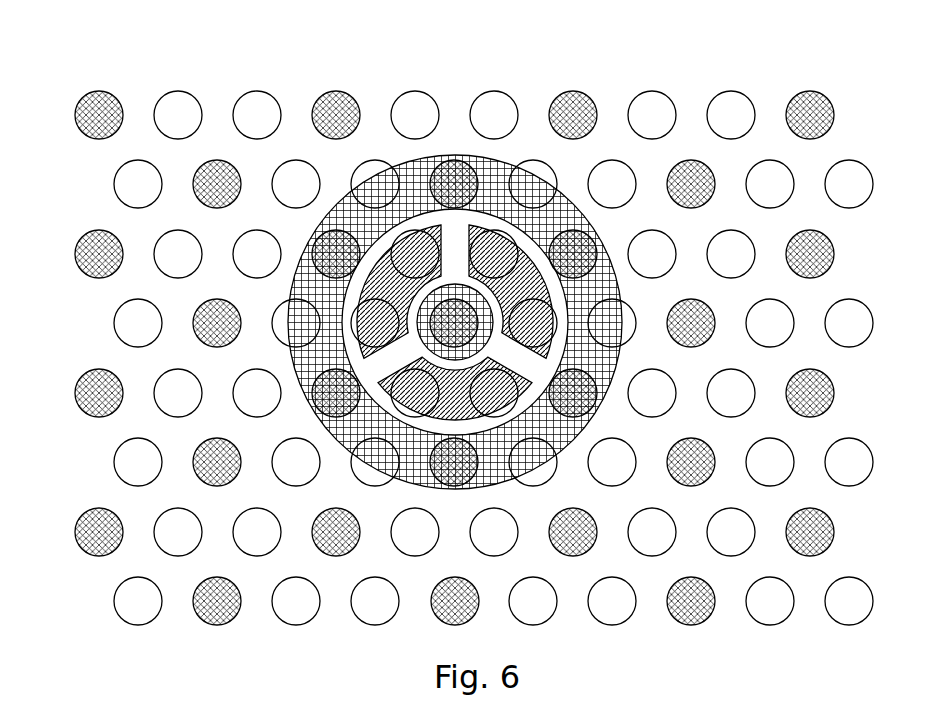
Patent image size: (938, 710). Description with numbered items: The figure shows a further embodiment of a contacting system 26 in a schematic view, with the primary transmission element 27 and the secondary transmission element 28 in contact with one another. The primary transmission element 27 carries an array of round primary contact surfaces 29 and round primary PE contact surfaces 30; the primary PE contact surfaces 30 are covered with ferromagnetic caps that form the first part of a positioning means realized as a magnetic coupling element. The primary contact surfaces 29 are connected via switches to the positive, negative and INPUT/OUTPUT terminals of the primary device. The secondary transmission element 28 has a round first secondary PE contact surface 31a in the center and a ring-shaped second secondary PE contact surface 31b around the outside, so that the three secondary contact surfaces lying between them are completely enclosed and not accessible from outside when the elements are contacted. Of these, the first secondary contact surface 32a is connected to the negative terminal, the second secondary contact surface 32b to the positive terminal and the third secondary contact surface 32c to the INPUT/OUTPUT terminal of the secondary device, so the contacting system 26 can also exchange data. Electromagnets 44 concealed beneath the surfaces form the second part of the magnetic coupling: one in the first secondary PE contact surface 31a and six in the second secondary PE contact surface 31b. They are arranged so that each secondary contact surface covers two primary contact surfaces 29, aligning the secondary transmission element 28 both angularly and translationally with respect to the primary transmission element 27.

The contacting system 26 is at (461, 388).
The primary transmission element 27 is at (424, 354).
The secondary transmission element 28 is at (410, 361).
The primary contact surfaces 29 is at (181, 530).
The primary PE contact surfaces 30 is at (336, 530).
The first secondary PE contact surface 31a is at (491, 317).
The second secondary PE contact surface 31b is at (550, 227).
The first secondary contact surface 32a is at (383, 280).
The second secondary contact surface 32b is at (491, 385).
The third secondary contact surface 32c is at (528, 278).
The electromagnets 44 is at (336, 395).